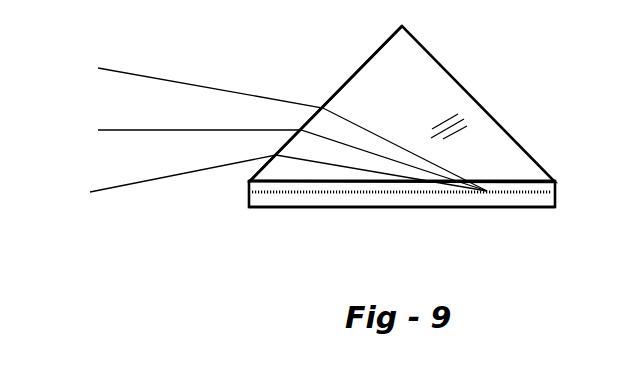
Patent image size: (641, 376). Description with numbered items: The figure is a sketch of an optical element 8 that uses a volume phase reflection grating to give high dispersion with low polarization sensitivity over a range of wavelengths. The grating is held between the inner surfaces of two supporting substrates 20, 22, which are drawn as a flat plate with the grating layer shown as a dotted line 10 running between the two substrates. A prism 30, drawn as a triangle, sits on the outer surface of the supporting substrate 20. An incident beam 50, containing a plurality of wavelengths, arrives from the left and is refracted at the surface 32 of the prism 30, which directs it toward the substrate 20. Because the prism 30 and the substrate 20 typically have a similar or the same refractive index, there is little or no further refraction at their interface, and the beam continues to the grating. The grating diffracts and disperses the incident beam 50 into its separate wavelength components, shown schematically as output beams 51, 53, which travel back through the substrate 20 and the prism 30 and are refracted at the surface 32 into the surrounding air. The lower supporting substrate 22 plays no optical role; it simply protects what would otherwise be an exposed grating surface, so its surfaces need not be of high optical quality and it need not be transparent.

The optical element 8 is at (537, 89).
The substrate 10 is at (556, 192).
The supporting substrate 20 is at (558, 181).
The supporting substrate 22 is at (558, 206).
The prism 30 is at (398, 108).
The surface of prism 32 is at (377, 53).
The incident beam 50 is at (272, 153).
The output beam 51 is at (275, 124).
The output beam 53 is at (272, 184).